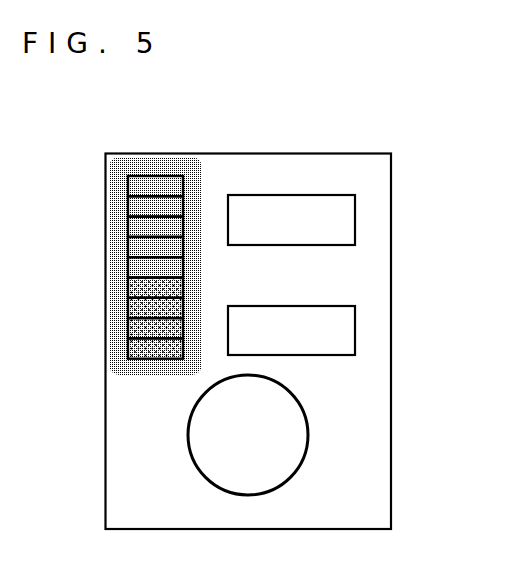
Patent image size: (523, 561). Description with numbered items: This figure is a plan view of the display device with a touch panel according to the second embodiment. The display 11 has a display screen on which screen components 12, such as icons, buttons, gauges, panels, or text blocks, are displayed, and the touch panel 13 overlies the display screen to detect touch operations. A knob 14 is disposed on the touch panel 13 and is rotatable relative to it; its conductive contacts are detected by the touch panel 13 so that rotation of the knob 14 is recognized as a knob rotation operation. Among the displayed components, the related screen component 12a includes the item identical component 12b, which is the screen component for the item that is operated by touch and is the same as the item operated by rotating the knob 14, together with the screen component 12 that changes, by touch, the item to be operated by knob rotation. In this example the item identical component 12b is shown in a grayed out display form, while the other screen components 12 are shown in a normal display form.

The display 11 is at (304, 342).
The touch panel 13 is at (391, 431).
The screen component 12 is at (355, 221).
The related screen component 12a is at (355, 331).
The item identical component 12b is at (161, 176).
The knob 14 is at (308, 422).